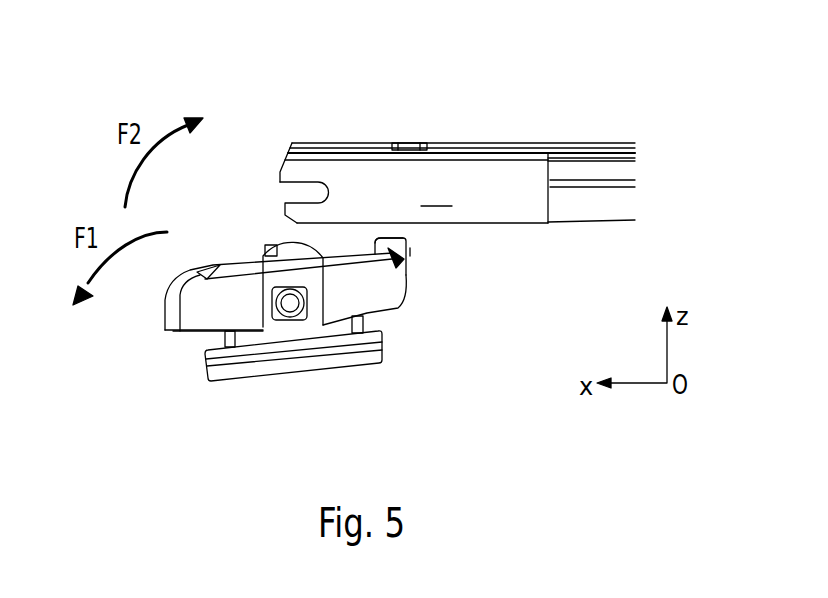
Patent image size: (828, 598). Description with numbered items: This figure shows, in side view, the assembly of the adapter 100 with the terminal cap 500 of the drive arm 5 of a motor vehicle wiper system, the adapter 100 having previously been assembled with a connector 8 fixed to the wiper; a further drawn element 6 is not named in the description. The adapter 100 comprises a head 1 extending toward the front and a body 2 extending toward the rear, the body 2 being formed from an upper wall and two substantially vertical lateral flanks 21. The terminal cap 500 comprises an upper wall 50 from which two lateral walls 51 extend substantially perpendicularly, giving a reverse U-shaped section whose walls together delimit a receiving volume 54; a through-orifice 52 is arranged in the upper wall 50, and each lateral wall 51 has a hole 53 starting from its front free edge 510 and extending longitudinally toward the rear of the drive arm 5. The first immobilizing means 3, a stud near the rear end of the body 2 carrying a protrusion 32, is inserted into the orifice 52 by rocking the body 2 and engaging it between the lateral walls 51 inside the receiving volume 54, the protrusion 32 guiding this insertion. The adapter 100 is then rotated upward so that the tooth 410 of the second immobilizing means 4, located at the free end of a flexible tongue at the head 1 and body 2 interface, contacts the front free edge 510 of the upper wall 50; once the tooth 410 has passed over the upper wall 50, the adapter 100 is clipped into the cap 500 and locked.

The head 1 is at (157, 298).
The adapter 100 is at (148, 338).
The body 2 is at (408, 312).
The lateral flanks 21 is at (365, 285).
The first immobilizing means 3 is at (407, 275).
The protrusion 32 is at (407, 238).
The second immobilizing means 4 is at (264, 250).
The tooth 410 is at (322, 322).
The drive arm 5 is at (593, 172).
The upper wall 50 is at (487, 143).
The lateral walls 51 is at (495, 190).
The through-orifice 52 is at (410, 142).
The hole 53 is at (310, 195).
The receiving volume 54 is at (416, 191).
The terminal cap 500 is at (443, 138).
The front free edge 510 is at (281, 172).
The spring leg 6 is at (303, 326).
The connector 8 is at (257, 368).